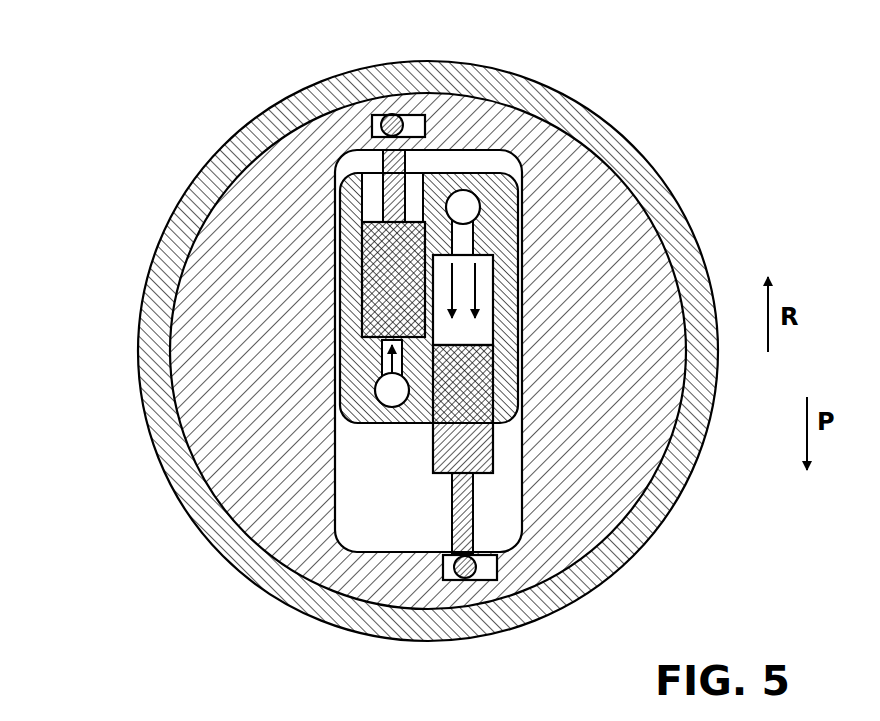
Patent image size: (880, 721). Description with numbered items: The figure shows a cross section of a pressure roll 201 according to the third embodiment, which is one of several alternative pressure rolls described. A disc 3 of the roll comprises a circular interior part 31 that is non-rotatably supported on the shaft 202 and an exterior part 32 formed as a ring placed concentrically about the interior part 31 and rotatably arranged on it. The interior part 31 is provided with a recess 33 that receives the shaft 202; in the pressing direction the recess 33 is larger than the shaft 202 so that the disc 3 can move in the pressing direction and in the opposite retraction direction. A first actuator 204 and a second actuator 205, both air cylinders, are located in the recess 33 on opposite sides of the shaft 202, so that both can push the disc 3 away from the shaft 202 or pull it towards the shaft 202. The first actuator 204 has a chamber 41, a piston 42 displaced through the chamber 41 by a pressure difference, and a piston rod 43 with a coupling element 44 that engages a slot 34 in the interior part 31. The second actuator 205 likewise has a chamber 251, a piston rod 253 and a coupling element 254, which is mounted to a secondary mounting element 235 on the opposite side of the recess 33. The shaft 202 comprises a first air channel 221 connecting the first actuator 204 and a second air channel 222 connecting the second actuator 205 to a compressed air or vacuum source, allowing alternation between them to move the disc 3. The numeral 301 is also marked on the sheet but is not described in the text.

The disc 3 is at (637, 163).
The interior part 31 is at (193, 428).
The exterior part 32 is at (210, 525).
The recess 33 is at (322, 582).
The slot 34 is at (458, 583).
The chamber 41 is at (483, 310).
The piston 42 is at (485, 445).
The piston rod 43 is at (477, 517).
The coupling element 44 is at (488, 583).
The pressure roll 201 is at (173, 122).
The shaft 202 is at (340, 288).
The first actuator 204 is at (452, 518).
The second actuator 205 is at (375, 162).
The first air channel 221 is at (465, 202).
The second air channel 222 is at (386, 408).
The secondary mounting element 235 is at (418, 118).
The chamber 251 is at (362, 252).
The piston rod 253 is at (392, 196).
The coupling element 254 is at (384, 116).
The pipe section 301 is at (145, 713).